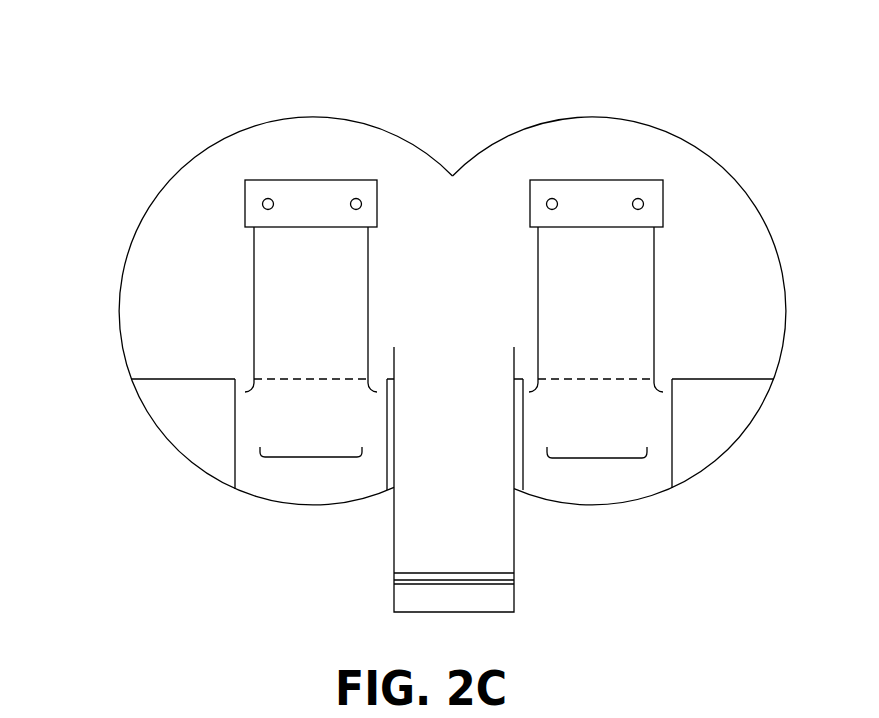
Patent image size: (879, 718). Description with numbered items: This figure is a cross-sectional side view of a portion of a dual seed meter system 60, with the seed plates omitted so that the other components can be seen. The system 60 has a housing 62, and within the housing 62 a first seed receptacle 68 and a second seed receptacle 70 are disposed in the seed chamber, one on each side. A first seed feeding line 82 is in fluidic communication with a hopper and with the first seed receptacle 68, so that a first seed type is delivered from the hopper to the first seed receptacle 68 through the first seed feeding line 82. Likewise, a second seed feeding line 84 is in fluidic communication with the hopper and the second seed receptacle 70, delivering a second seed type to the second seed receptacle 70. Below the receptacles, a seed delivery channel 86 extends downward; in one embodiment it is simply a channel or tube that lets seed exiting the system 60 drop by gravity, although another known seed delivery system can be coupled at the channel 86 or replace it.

The seed meter system 60 is at (143, 77).
The housing 62 is at (120, 284).
The first seed receptacle 68 is at (188, 410).
The second seed receptacle 70 is at (713, 405).
The first seed feeding line 82 is at (382, 180).
The second seed feeding line 84 is at (527, 179).
The seed delivery channel 86 is at (483, 535).